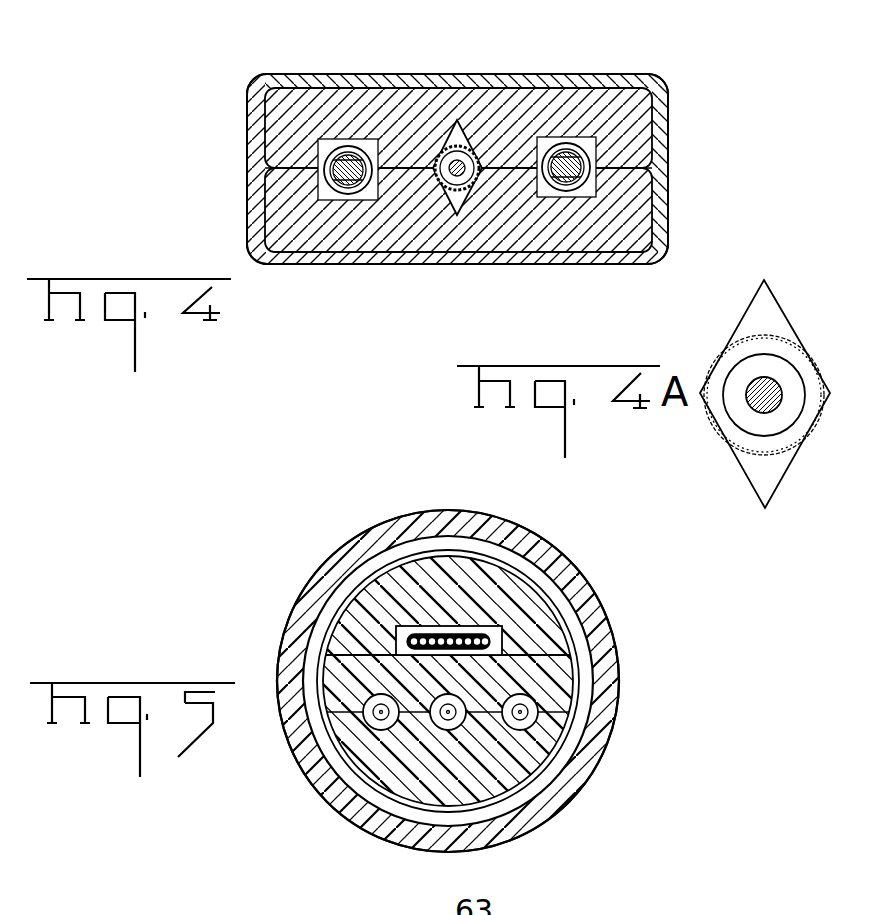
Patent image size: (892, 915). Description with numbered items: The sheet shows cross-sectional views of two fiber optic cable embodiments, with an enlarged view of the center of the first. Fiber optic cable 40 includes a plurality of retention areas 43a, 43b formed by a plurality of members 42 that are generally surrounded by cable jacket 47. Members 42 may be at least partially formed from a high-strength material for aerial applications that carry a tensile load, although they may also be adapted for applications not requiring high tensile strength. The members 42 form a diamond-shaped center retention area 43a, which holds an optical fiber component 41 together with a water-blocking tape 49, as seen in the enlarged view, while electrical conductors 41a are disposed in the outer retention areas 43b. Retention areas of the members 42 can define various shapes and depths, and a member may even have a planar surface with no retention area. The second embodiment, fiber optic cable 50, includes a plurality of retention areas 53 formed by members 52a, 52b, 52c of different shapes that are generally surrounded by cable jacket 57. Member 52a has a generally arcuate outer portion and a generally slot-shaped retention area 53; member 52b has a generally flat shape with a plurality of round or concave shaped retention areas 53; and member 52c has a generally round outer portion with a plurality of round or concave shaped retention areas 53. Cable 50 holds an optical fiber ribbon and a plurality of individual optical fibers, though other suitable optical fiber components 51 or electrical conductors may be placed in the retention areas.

In FIG. 4, the fiber optic cable 40 is at (295, 52).
In FIG. 4, the cable jacket 47 is at (258, 93).
In FIG. 4, the members 42 is at (643, 186).
In FIG. 4, the center retention area 43a is at (457, 123).
In FIG. 4, the outer retention areas 43b is at (330, 145).
In FIG. 4, the optical fiber component 41 is at (467, 176).
In FIG. 4A, the optical fiber component 41 is at (753, 382).
In FIG. 4, the electrical conductors 41a is at (648, 197).
In FIG. 4, the water-blocking tape 49 is at (457, 192).
In FIG. 4A, the water-blocking tape 49 is at (790, 348).
In FIG. 5, the fiber optic cable 50 is at (298, 560).
In FIG. 5, the optical fiber components 51 is at (440, 652).
In FIG. 5, the member 52a is at (563, 618).
In FIG. 5, the member 52b is at (579, 682).
In FIG. 5, the member 52c is at (553, 740).
In FIG. 5, the retention areas 53 is at (505, 722).
In FIG. 5, the cable jacket 57 is at (577, 787).